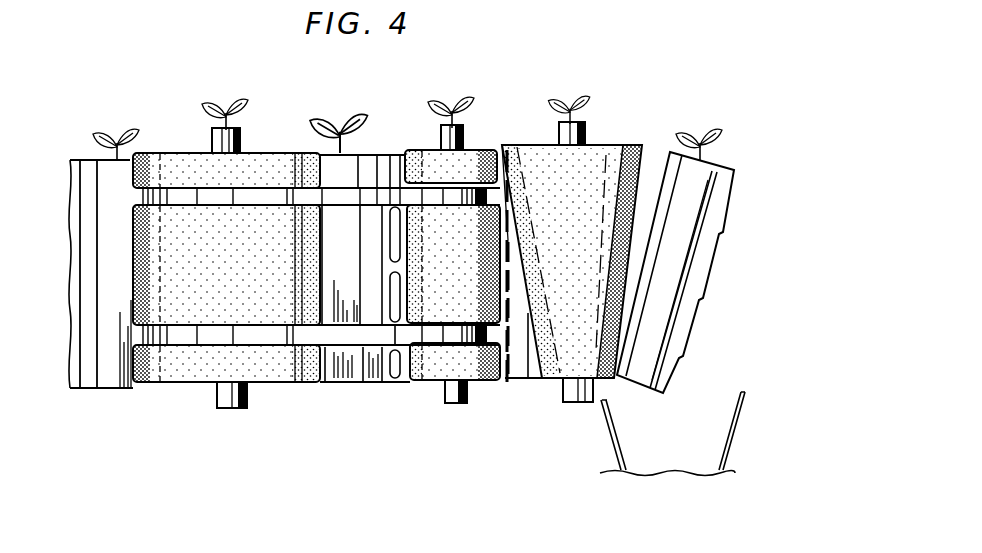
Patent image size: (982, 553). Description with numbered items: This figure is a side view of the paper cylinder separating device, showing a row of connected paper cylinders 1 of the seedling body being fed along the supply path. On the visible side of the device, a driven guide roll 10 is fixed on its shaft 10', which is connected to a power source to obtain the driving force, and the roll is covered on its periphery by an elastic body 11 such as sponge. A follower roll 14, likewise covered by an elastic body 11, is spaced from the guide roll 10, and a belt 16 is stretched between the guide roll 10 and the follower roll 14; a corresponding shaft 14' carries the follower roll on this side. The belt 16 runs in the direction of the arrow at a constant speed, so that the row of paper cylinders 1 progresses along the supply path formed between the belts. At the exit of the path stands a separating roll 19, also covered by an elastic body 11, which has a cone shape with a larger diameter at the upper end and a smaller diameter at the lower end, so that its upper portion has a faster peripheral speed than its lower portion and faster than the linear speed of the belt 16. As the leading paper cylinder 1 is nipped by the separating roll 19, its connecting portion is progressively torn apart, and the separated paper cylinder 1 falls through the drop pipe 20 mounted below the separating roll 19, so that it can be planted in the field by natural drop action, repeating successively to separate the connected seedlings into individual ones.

The paper cylinder 1 is at (110, 173).
The guide roll 10 is at (271, 252).
The shaft 10' is at (228, 122).
The elastic body 11 is at (153, 168).
The follower roll 14 is at (446, 244).
The pin of movable gripping block 14' is at (451, 117).
The belt 16 is at (342, 197).
The separating roll 19 is at (583, 172).
The drop pipe 20 is at (607, 422).